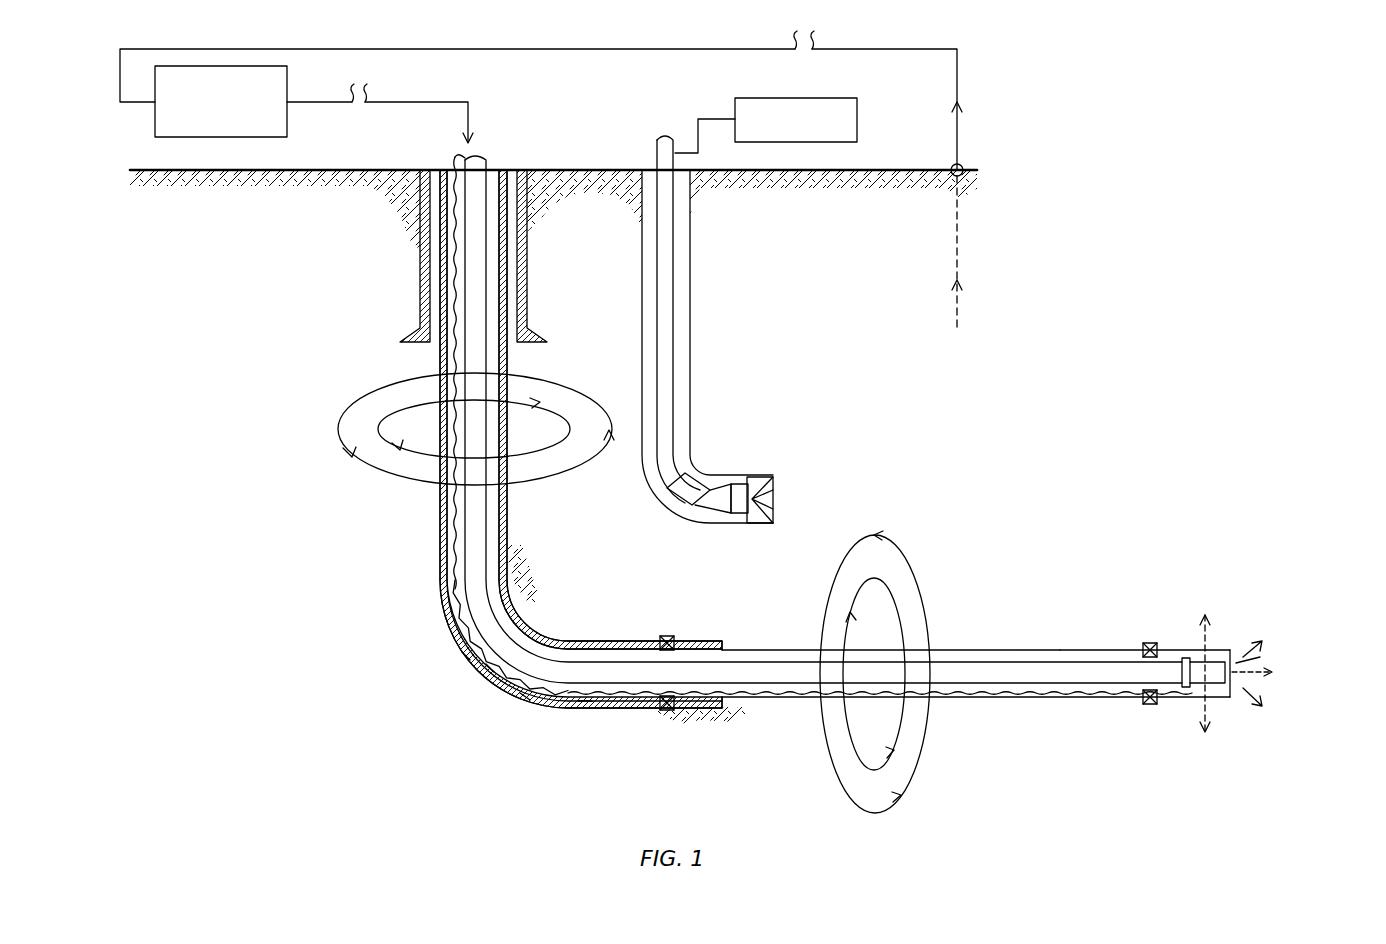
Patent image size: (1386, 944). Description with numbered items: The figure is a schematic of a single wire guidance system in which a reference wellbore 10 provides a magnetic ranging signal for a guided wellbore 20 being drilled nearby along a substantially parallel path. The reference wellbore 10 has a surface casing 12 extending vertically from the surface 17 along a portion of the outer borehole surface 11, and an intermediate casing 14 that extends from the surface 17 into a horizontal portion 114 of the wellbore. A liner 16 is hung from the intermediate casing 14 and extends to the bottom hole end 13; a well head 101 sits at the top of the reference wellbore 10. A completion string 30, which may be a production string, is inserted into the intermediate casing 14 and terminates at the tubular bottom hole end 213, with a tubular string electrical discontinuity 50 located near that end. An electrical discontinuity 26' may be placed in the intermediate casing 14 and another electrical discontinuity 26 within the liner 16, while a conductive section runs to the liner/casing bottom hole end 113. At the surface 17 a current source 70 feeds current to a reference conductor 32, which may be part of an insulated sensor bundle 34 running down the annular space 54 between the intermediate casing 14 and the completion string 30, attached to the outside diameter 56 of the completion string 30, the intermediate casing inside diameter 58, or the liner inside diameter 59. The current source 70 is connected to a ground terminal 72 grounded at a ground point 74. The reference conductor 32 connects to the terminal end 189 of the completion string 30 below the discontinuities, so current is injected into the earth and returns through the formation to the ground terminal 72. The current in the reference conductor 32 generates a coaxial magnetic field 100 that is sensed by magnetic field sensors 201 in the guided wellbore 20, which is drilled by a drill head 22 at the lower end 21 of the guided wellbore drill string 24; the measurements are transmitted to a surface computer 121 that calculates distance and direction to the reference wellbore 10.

The reference wellbore 10 is at (583, 695).
The outer borehole surface 11 is at (507, 360).
The surface casing 12 is at (420, 275).
The bottom hole end 13 is at (1235, 670).
The intermediate casing 14 is at (440, 548).
The liner 16 is at (1033, 650).
The surface 17 is at (590, 168).
The guided wellbore 20 is at (690, 462).
The lower end 21 is at (720, 478).
The drill head 22 is at (745, 512).
The guided wellbore drill string 24 is at (676, 382).
The electrical discontinuity 26 is at (1179, 631).
The electrical discontinuity 26' is at (683, 624).
The completion string 30 is at (485, 548).
The reference conductor 32 is at (790, 697).
The sensor bundle 34 is at (467, 620).
The tubular string electrical discontinuity 50 is at (1183, 690).
The annular space 54 is at (492, 668).
The outside diameter 56 is at (527, 697).
The intermediate casing inside diameter 58 is at (473, 657).
The liner inside diameter 59 is at (1077, 657).
The current source 70 is at (288, 88).
The ground terminal 72 is at (963, 163).
The ground point 74 is at (963, 178).
The magnetic field 100 is at (337, 432).
The well head 101 is at (493, 175).
The liner/casing bottom hole end 113 is at (1238, 688).
The horizontal portion 114 is at (667, 712).
The computer 121 is at (863, 110).
The terminal end 189 is at (1238, 650).
The magnetic field sensors 201 is at (683, 498).
The tubular bottom hole end 213 is at (1238, 657).